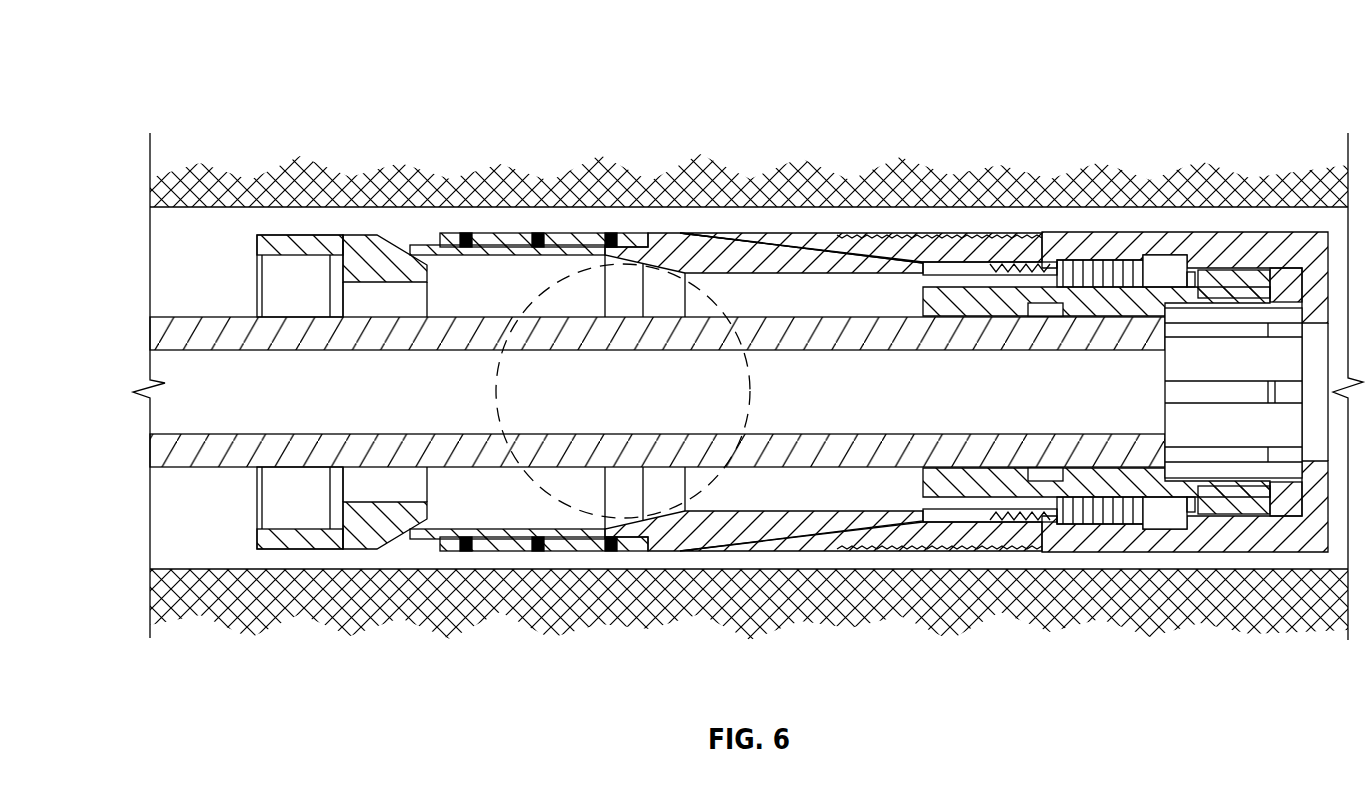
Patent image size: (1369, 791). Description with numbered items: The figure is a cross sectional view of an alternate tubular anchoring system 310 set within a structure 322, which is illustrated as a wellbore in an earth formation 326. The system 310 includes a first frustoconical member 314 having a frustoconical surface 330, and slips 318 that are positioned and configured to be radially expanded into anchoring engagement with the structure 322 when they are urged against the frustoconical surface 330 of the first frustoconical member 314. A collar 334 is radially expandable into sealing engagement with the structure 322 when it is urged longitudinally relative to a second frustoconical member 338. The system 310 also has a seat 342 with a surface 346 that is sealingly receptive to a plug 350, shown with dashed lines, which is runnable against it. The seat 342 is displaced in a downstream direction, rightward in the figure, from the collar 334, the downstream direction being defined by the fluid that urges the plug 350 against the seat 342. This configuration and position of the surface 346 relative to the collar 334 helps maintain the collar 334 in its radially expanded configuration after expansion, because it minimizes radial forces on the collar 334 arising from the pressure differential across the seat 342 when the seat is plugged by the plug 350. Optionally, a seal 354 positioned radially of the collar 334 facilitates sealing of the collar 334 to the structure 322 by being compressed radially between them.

The tubular anchoring system 310 is at (240, 72).
The first frustoconical member 314 is at (717, 235).
The slips 318 is at (897, 235).
The structure 322 is at (240, 210).
The earth formation 326 is at (350, 182).
The frustoconical surface 330 is at (900, 259).
The collar 334 is at (428, 540).
The second frustoconical member 338 is at (362, 533).
The seat 342 is at (708, 537).
The surface 346 is at (668, 268).
The plug 350 is at (752, 402).
The seal 354 is at (515, 552).